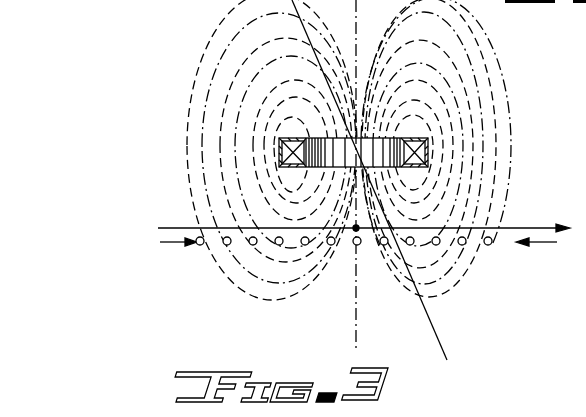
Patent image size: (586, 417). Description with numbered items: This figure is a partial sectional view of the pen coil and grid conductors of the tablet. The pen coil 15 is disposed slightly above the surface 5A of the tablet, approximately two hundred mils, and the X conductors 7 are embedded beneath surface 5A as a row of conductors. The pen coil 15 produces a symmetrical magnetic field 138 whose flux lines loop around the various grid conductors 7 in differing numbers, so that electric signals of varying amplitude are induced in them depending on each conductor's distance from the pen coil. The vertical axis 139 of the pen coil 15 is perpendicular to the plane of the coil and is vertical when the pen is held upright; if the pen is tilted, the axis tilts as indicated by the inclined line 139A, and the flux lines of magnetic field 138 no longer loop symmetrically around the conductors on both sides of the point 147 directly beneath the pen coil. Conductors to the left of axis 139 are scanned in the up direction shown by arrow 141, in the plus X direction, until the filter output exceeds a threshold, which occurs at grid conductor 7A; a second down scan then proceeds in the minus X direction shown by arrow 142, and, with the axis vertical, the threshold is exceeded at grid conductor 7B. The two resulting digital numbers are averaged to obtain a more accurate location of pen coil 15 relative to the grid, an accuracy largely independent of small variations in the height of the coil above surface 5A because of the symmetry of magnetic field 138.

The magnetic field 138 is at (476, 85).
The pen coil 15 is at (415, 135).
The tilted axis 139A is at (441, 345).
The vertical axis 139 is at (361, 337).
The surface 5A is at (537, 226).
The point 147 is at (355, 227).
The up scan direction 141 is at (170, 243).
The down scan direction 142 is at (545, 243).
The X conductors 7 is at (349, 270).
The grid conductor 7A is at (303, 245).
The grid conductor 7B is at (412, 245).